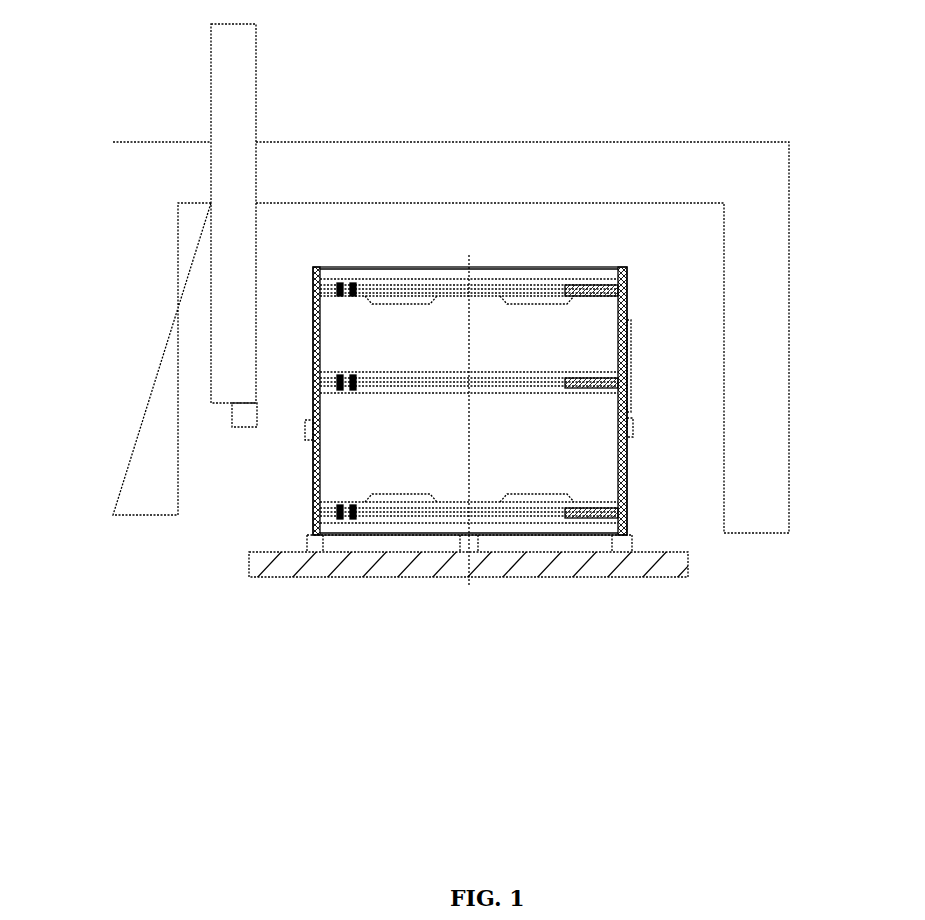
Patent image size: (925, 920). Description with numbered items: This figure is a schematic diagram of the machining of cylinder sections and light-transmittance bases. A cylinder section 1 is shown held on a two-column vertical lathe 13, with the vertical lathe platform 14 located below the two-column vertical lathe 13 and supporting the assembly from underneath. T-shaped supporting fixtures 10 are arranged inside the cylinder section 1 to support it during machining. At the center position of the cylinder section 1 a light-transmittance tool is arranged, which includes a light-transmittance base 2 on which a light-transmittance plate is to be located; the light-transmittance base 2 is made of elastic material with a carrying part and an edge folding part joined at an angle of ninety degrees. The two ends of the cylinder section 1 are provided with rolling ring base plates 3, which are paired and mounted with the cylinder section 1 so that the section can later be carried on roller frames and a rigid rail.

The cylinder section 1 is at (313, 505).
The light-transmittance base 2 is at (447, 505).
The rolling ring base plate 3 is at (627, 402).
The T-shaped supporting fixture 10 is at (313, 390).
The two-column vertical lathe 13 is at (773, 378).
The vertical lathe platform 14 is at (530, 558).